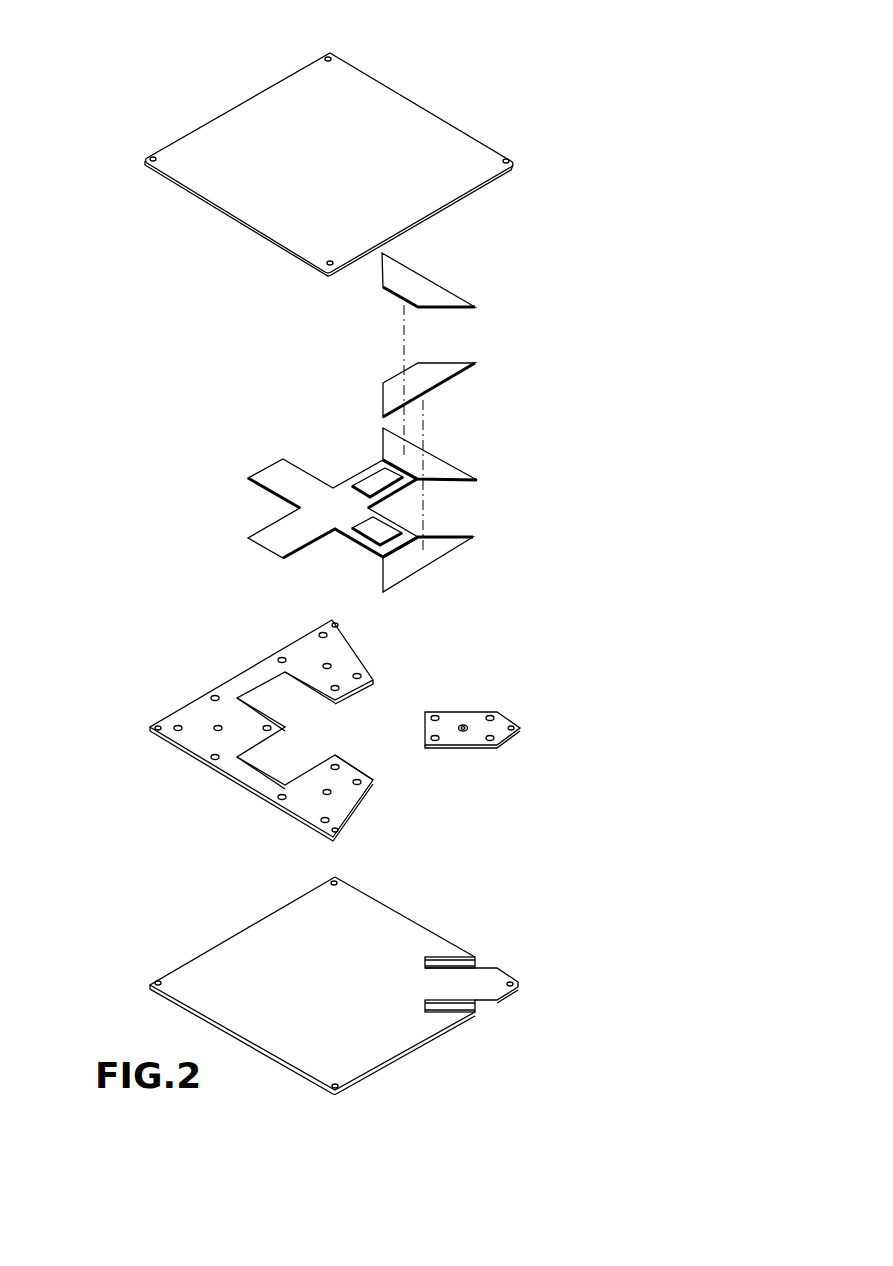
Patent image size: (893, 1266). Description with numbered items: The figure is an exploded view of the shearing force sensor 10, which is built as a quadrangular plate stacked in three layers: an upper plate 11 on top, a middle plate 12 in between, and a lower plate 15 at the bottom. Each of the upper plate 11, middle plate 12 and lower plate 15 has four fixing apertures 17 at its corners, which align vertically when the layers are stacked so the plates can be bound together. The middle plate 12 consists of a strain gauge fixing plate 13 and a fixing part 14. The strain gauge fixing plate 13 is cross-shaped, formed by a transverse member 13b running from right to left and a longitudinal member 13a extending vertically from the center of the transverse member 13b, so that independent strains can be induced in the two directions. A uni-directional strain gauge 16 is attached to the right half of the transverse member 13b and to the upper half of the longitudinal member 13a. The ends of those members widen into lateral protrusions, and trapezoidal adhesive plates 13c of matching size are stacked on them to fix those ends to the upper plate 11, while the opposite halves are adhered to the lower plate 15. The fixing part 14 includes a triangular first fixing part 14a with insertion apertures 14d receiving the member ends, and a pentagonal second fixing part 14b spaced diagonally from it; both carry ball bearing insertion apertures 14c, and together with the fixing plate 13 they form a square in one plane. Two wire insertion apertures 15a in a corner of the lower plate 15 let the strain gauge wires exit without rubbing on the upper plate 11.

The shearing force sensor 10 is at (146, 532).
The upper plate 11 is at (443, 130).
The middle plate 12 is at (305, 617).
The strain gauge fixing plate 13 is at (273, 547).
The longitudinal member 13a is at (358, 476).
The transverse member 13b is at (397, 528).
The adhesive plate 13c is at (435, 302).
The fixing part 14 is at (255, 674).
The first fixing part 14a is at (243, 775).
The second fixing part 14b is at (473, 740).
The ball bearing insertion aperture 14c is at (362, 675).
The insertion aperture 14d is at (262, 770).
The lower plate 15 is at (220, 950).
The wire insertion aperture 15a is at (445, 1007).
The strain gauge 16 is at (390, 477).
The fixing aperture 17 is at (332, 52).